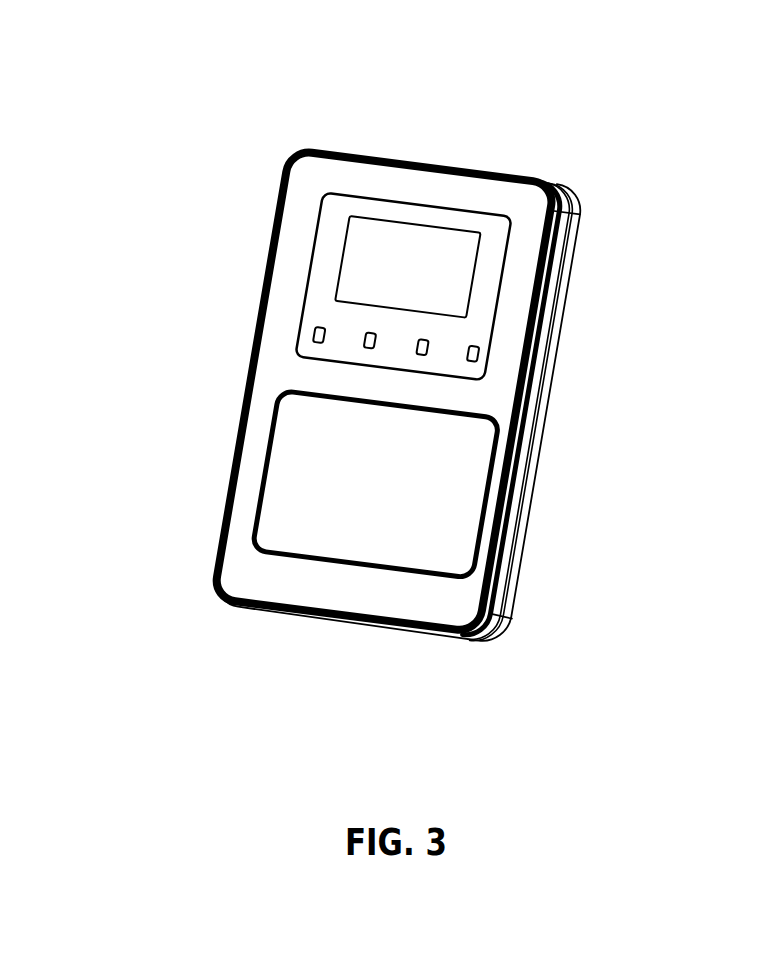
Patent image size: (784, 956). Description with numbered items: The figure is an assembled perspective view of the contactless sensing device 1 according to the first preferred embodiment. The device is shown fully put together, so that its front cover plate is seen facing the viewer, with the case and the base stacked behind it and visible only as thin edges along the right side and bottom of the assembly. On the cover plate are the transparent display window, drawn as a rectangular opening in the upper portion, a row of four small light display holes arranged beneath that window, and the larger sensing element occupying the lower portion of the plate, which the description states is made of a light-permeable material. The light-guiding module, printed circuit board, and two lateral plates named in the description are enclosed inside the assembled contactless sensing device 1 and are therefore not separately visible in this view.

The contactless sensing device 1 is at (640, 68).